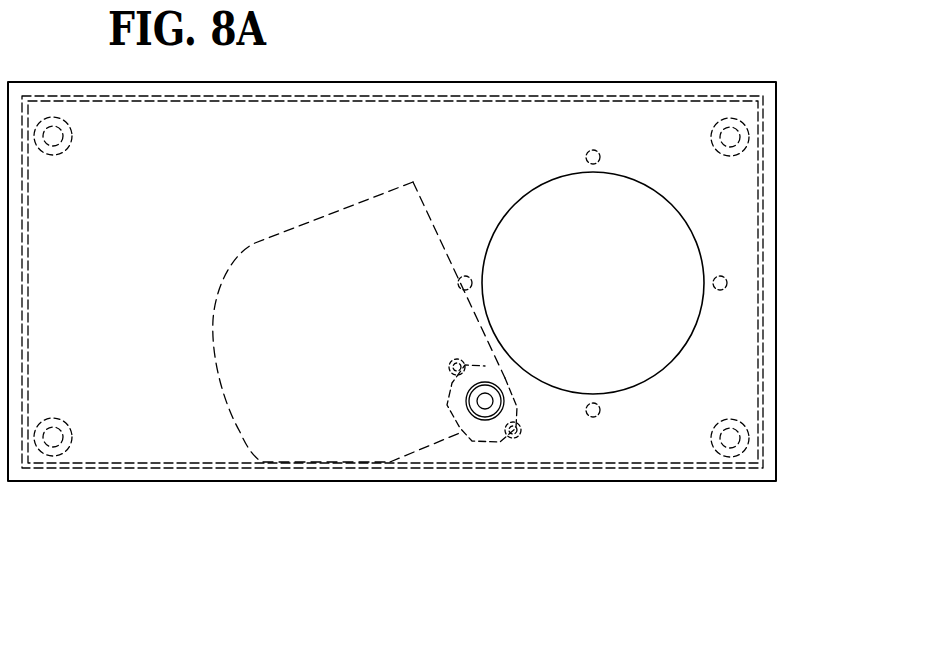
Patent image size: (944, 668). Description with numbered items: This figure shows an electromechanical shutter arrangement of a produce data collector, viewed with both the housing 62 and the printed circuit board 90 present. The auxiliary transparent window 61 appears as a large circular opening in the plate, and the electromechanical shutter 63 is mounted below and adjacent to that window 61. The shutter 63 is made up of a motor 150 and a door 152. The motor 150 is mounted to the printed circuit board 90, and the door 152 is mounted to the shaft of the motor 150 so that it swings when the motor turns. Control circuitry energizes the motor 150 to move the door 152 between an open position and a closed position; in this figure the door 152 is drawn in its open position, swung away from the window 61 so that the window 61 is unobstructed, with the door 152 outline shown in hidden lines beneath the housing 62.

The auxiliary transparent window 61 is at (690, 232).
The housing 62 is at (776, 403).
The shutter 63 is at (235, 430).
The printed circuit board 90 is at (723, 350).
The motor 150 is at (487, 412).
The door 152 is at (413, 452).